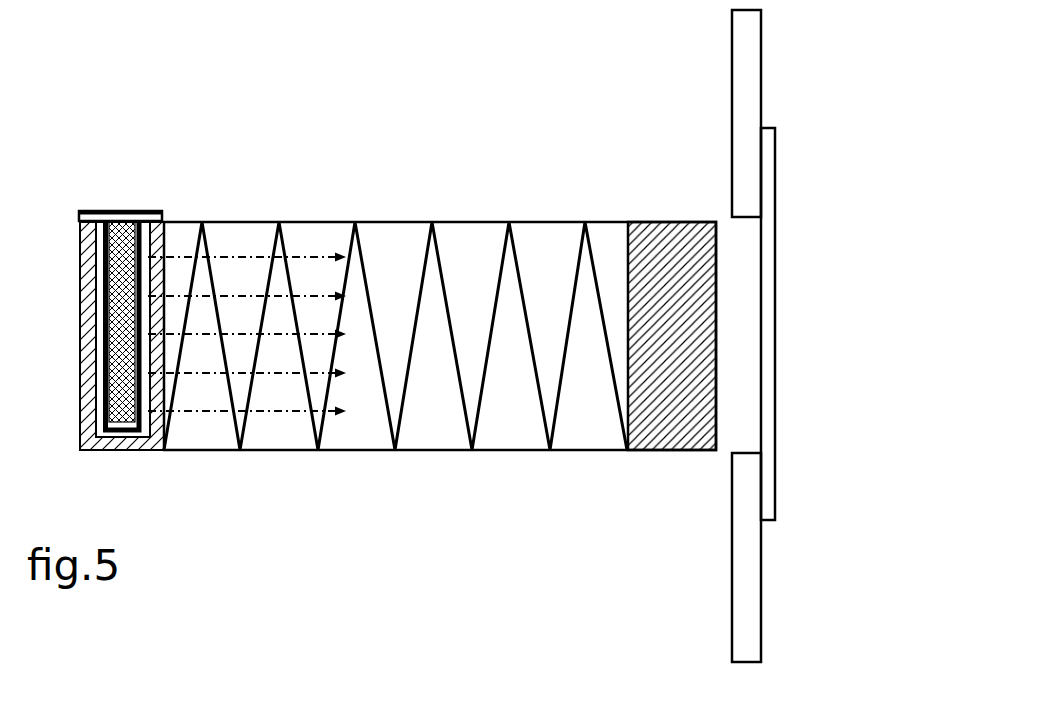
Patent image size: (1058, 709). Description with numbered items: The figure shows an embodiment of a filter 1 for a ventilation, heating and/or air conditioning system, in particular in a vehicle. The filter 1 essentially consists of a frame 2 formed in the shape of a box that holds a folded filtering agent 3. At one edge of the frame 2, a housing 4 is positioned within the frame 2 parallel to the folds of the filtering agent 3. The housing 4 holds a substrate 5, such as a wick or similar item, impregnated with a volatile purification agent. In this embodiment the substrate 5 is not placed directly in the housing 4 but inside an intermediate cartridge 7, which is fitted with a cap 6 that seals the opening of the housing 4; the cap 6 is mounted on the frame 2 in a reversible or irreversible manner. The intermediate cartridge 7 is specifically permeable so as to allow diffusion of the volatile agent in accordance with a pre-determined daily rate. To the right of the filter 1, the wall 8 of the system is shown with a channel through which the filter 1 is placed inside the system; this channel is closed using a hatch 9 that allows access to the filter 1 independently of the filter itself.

The filter 1 is at (365, 180).
The frame 2 is at (668, 222).
The filtering agent 3 is at (483, 390).
The housing 4 is at (97, 298).
The substrate 5 is at (107, 348).
The cap 6 is at (125, 211).
The intermediate cartridge 7 is at (148, 437).
The wall 8 is at (761, 57).
The hatch 9 is at (775, 310).